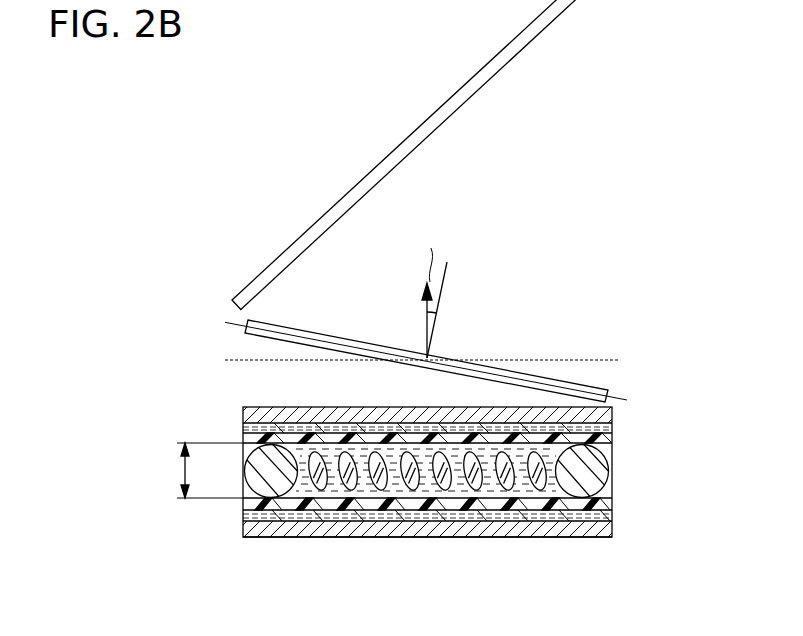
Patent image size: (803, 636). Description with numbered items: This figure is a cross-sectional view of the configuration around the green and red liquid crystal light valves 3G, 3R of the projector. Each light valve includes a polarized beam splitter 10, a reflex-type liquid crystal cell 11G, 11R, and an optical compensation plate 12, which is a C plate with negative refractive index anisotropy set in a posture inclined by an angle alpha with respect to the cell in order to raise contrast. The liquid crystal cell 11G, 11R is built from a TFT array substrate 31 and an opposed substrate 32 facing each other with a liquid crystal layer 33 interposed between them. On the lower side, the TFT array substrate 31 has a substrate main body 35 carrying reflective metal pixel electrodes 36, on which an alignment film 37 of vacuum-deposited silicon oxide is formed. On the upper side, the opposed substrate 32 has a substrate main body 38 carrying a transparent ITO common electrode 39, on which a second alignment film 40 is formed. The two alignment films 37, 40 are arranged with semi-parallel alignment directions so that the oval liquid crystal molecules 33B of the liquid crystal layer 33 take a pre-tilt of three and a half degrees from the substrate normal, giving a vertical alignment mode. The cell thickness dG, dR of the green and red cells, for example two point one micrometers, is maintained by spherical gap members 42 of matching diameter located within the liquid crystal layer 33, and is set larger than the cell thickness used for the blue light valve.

The green liquid crystal light valve 3G is at (400, 298).
The red liquid crystal light valve 3R is at (284, 119).
The polarized beam splitter 10 is at (395, 157).
The optical compensation plate 12 is at (358, 341).
The green light liquid crystal cell 11G is at (400, 489).
The red light liquid crystal cell 11R is at (226, 408).
The cell thickness of green light liquid crystal cell dG is at (175, 470).
The cell thickness of red light liquid crystal cell dR is at (175, 470).
The opposed substrate 32 is at (690, 384).
The substrate main body 38 is at (613, 413).
The common electrode 39 is at (613, 431).
The alignment film 40 is at (613, 438).
The spherical gap member 42 is at (613, 464).
The liquid crystal layer 33 is at (393, 490).
The liquid crystal molecules 33B is at (430, 474).
The TFT array substrate 31 is at (690, 487).
The alignment film 37 is at (622, 503).
The pixel electrode 36 is at (613, 516).
The substrate main body 35 is at (613, 532).